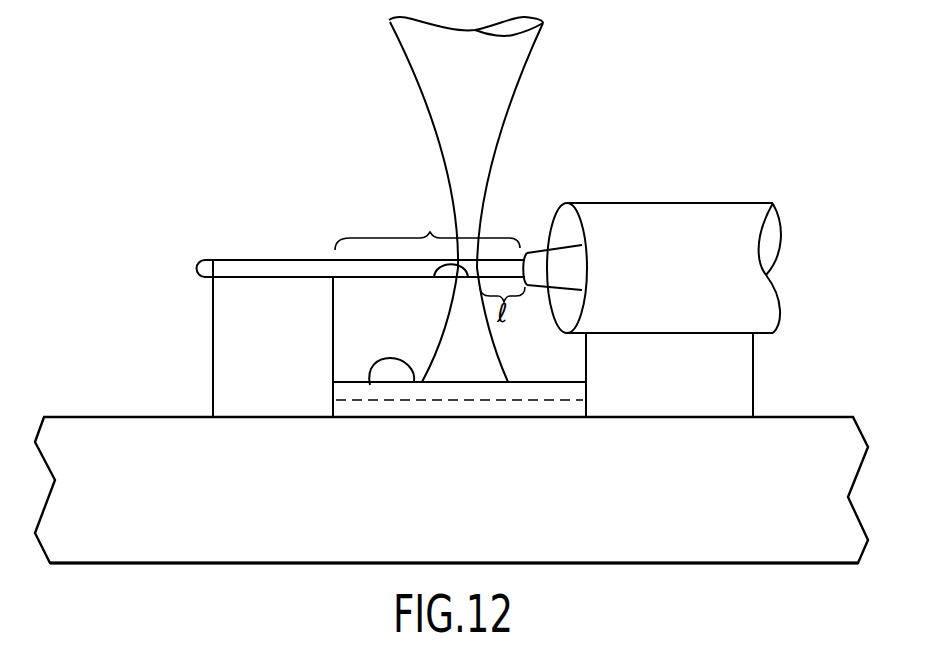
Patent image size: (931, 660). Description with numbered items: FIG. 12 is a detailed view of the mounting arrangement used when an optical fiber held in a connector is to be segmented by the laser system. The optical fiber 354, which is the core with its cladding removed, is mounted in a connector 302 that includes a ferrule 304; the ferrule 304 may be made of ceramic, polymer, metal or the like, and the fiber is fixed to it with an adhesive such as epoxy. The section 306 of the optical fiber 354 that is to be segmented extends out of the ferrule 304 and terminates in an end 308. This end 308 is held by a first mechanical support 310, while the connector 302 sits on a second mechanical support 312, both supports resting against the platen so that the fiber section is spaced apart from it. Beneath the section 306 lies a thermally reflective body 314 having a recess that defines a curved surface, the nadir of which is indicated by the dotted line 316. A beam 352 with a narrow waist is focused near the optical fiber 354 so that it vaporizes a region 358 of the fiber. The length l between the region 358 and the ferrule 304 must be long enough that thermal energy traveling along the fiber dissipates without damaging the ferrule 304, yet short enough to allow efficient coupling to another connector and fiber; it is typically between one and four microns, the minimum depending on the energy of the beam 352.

The connector 302 is at (668, 216).
The ferrule 304 is at (541, 258).
The section 306 is at (430, 234).
The end 308 is at (245, 260).
The first mechanical support 310 is at (292, 361).
The second mechanical support 312 is at (690, 388).
The thermally reflective body 314 is at (370, 385).
The dotted line 316 is at (473, 400).
The beam 352 is at (515, 61).
The optical fiber 354 is at (297, 260).
The region 358 is at (434, 277).